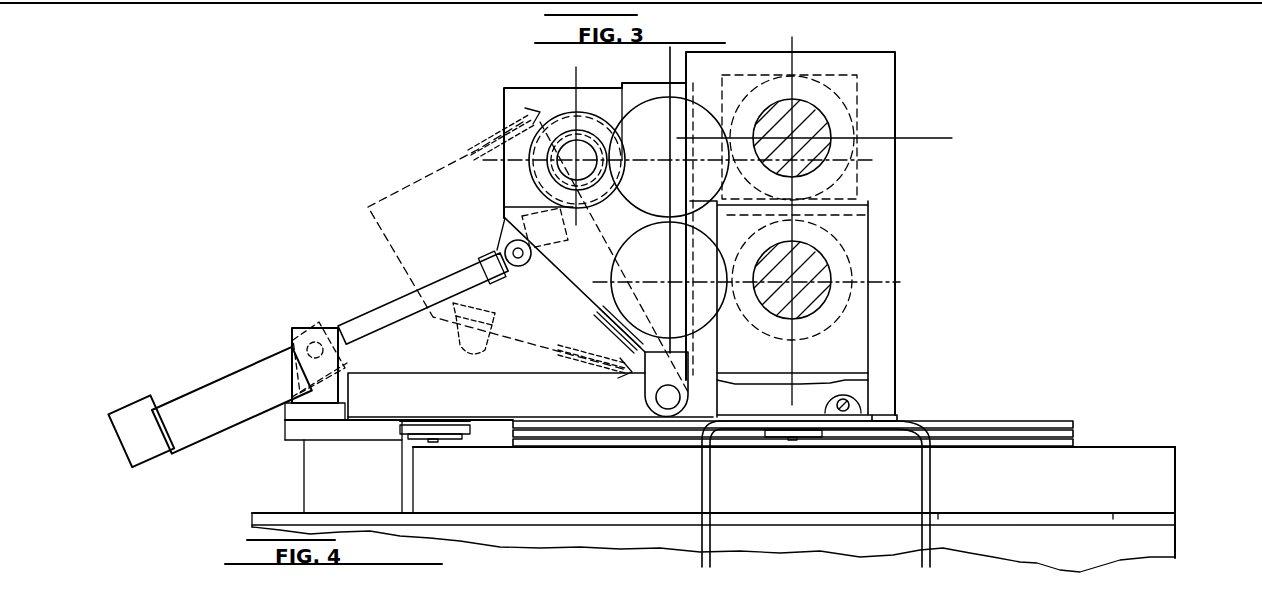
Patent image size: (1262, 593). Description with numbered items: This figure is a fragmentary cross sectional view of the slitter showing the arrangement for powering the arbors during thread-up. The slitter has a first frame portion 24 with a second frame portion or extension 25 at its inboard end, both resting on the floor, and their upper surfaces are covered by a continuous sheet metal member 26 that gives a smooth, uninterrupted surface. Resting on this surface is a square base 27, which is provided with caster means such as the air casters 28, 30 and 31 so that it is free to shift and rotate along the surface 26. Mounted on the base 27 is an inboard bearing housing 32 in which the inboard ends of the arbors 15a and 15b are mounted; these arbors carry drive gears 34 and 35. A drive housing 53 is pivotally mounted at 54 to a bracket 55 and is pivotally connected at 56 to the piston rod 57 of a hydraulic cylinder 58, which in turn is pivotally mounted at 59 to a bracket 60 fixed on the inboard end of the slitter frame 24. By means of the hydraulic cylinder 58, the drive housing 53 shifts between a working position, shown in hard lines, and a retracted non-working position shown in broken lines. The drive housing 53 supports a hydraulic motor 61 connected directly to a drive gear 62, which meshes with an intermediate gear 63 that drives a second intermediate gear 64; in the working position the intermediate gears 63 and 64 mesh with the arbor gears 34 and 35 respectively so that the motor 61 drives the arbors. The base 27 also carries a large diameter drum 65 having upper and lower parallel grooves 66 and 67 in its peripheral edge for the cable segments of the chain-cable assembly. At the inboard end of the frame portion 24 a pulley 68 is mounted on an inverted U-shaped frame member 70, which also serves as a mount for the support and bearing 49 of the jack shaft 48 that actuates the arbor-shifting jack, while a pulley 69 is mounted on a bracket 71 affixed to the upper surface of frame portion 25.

The arbor 15a is at (830, 133).
The arbor 15b is at (833, 296).
The first frame portion 24 is at (1098, 3).
The second frame portion 25 is at (258, 3).
The continuous sheet metal member 26 is at (1175, 520).
The base 27 is at (1168, 467).
The air caster 28 is at (1013, 513).
The air caster 30 is at (523, 513).
The air caster 31 is at (790, 515).
The inboard bearing housing 32 is at (895, 82).
The drive gear 34 is at (857, 77).
The drive gear 35 is at (847, 248).
The shaft 48 is at (847, 400).
The support and bearing 49 is at (850, 405).
The drive housing 53 is at (527, 95).
The pivotal mounting 54 is at (656, 397).
The bracket 55 is at (530, 355).
The pivotal connection 56 is at (521, 258).
The piston rod 57 is at (382, 312).
The hydraulic cylinder 58 is at (245, 368).
The pivotal mounting 59 is at (313, 340).
The bracket 60 is at (303, 395).
The hydraulic motor 61 is at (555, 117).
The drive gear 62 is at (584, 195).
The intermediate gear 63 is at (668, 56).
The second intermediate gear 64 is at (775, 333).
The drum 65 is at (1007, 420).
The upper groove 66 is at (1073, 428).
The lower groove 67 is at (1073, 442).
The pulley 68 is at (810, 432).
The pulley 69 is at (447, 422).
The inverted U-shaped frame member 70 is at (927, 488).
The bracket 71 is at (425, 420).